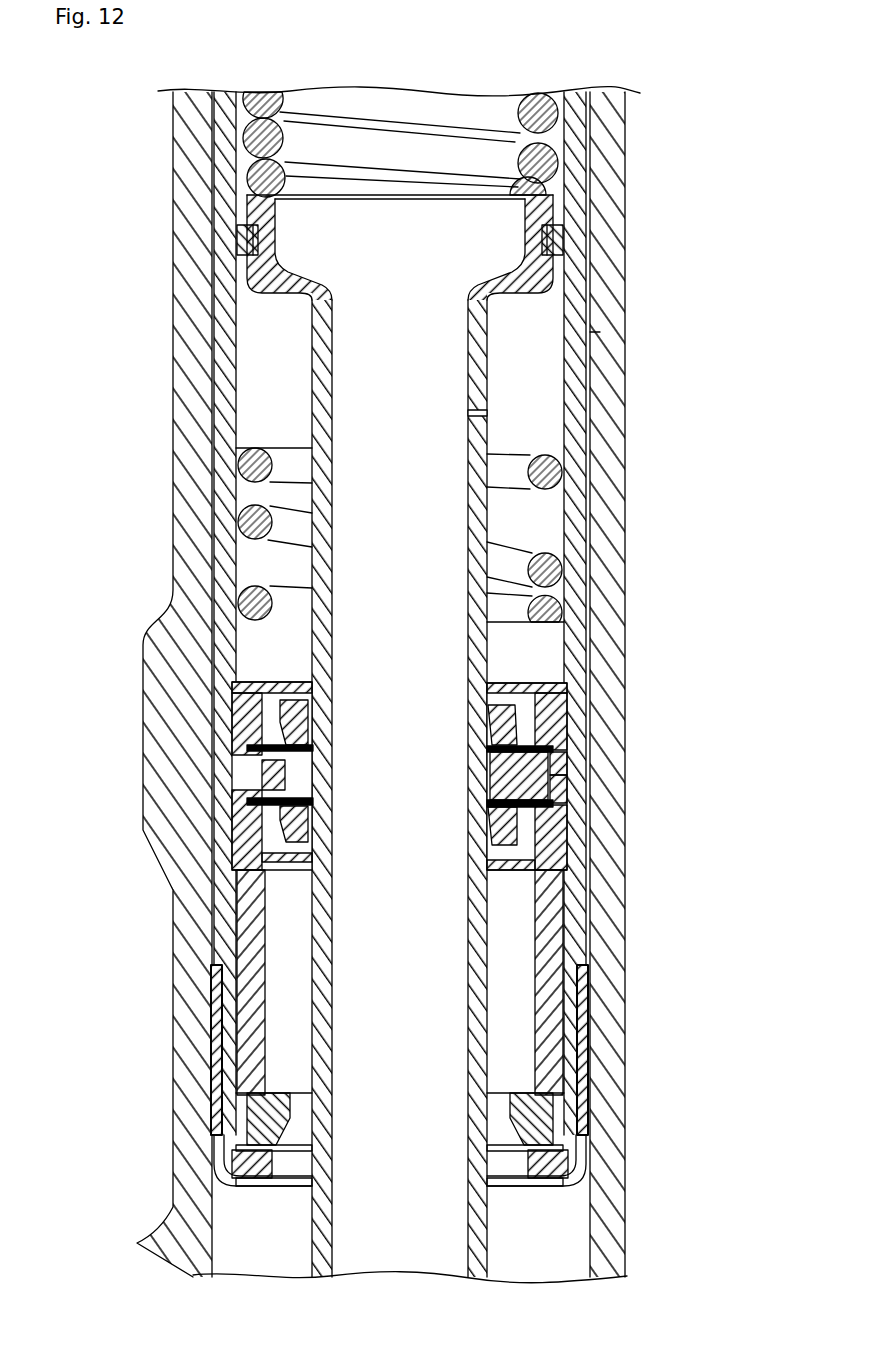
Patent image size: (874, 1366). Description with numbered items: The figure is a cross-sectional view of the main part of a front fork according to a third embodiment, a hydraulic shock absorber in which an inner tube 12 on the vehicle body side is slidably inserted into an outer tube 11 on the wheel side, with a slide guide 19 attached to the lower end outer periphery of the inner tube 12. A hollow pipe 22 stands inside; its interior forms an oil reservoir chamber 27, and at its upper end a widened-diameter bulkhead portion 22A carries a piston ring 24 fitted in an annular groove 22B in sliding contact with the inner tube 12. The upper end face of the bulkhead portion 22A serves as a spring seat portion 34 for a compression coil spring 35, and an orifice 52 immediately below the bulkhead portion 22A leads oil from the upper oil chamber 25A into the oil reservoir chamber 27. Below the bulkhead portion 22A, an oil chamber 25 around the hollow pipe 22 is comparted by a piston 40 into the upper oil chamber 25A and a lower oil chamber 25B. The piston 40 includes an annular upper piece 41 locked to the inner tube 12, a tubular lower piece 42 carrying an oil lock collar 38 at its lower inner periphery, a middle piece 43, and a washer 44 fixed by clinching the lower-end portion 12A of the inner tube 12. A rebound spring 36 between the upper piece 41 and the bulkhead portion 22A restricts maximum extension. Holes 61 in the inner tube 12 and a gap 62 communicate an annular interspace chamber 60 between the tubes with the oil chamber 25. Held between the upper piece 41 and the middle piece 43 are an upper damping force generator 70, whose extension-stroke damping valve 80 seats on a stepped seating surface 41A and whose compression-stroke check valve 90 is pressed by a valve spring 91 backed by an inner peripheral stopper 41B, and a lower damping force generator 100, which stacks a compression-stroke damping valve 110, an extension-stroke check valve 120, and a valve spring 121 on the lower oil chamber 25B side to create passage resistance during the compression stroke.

The outer tube 11 is at (173, 208).
The inner tube 12 is at (228, 142).
The lower-end portion of the inner tube 12A is at (567, 1190).
The slide guide 19 is at (215, 1040).
The hollow pipe 22 is at (483, 1235).
The bulkhead portion 22A is at (232, 183).
The annular groove 22B is at (240, 240).
The piston ring 24 is at (247, 262).
The oil chamber 25 is at (255, 355).
The upper oil chamber 25A is at (255, 403).
The lower oil chamber 25B is at (262, 1255).
The oil reservoir chamber 27 is at (455, 255).
The spring seat portion 34 is at (548, 210).
The compression coil spring 35 is at (540, 165).
The rebound spring 36 is at (545, 472).
The oil lock collar 38 is at (535, 1110).
The piston 40 is at (556, 920).
The upper piece 41 is at (550, 705).
The stepped seating surface 41A is at (552, 760).
The inner peripheral stopper 41B is at (497, 686).
The lower piece 42 is at (548, 990).
The middle piece 43 is at (550, 845).
The washer 44 is at (548, 1165).
The orifice 52 is at (470, 413).
The annular interspace chamber 60 is at (592, 332).
The holes 61 is at (520, 765).
The gap 62 is at (555, 782).
The upper damping force generator 70 is at (272, 713).
The extension-stroke damping valve 80 is at (265, 775).
The compression-stroke check valve 90 is at (262, 746).
The valve spring 91 is at (262, 683).
The lower damping force generator 100 is at (262, 878).
The compression-stroke damping valve 110 is at (283, 828).
The extension-stroke check valve 120 is at (265, 845).
The valve spring 121 is at (262, 908).